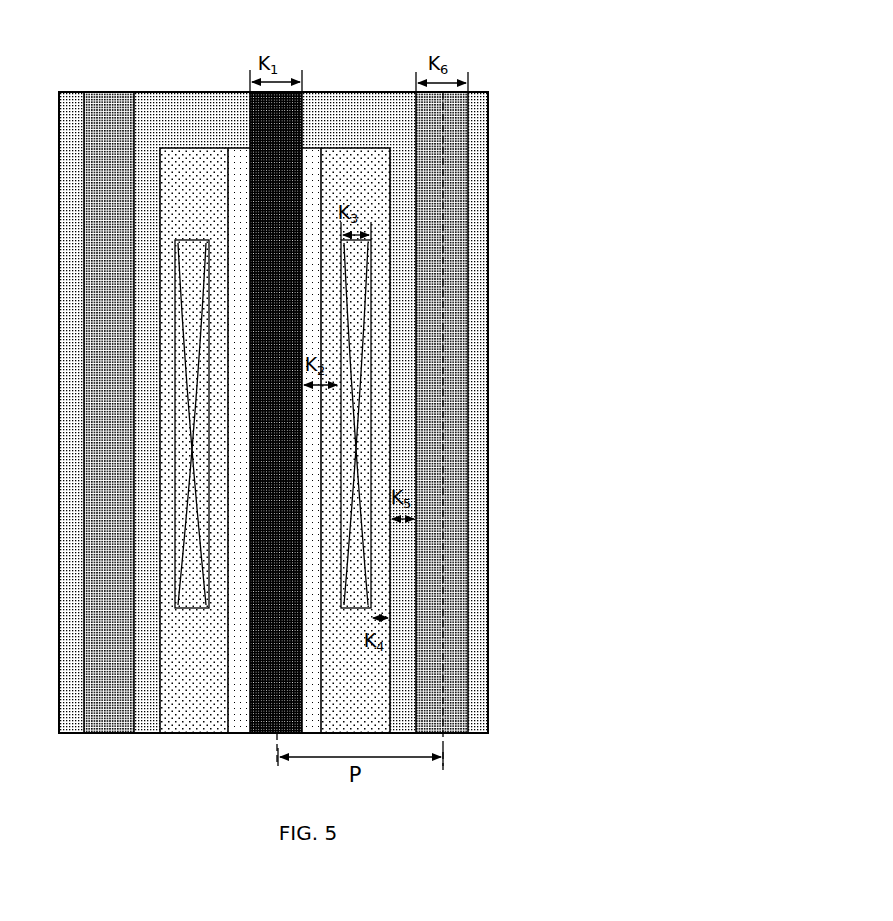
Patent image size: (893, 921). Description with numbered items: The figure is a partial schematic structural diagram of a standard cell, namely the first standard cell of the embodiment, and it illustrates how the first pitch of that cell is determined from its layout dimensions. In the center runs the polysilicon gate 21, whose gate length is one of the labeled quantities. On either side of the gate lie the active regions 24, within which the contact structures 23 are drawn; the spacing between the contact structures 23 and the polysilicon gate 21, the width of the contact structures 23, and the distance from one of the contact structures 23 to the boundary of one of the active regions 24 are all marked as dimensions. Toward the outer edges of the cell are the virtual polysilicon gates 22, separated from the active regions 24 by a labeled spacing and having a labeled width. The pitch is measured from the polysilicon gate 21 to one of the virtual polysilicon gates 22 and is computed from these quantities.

The polysilicon gate 21 is at (305, 100).
The virtual polysilicon gates 22 is at (112, 90).
The contact structures 23 is at (357, 425).
The active regions 24 is at (391, 440).